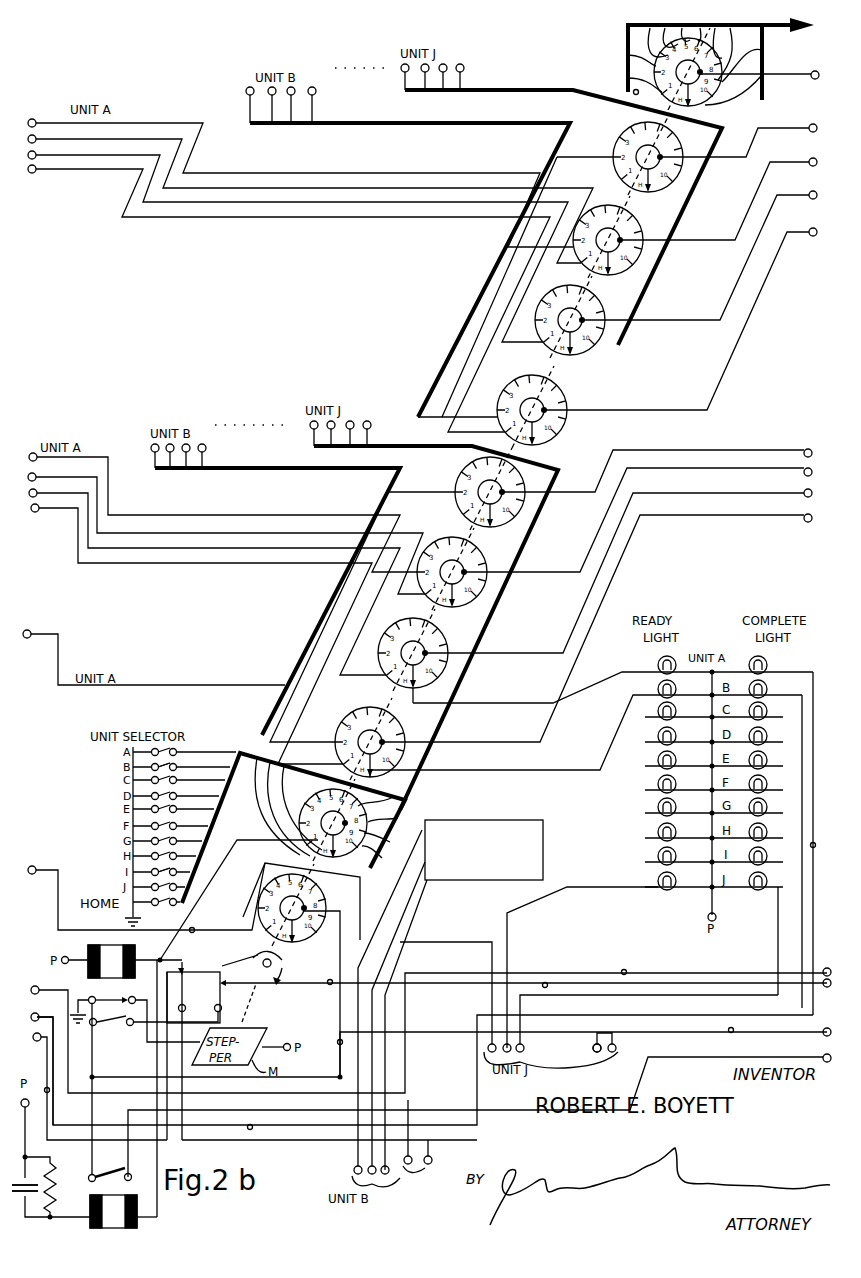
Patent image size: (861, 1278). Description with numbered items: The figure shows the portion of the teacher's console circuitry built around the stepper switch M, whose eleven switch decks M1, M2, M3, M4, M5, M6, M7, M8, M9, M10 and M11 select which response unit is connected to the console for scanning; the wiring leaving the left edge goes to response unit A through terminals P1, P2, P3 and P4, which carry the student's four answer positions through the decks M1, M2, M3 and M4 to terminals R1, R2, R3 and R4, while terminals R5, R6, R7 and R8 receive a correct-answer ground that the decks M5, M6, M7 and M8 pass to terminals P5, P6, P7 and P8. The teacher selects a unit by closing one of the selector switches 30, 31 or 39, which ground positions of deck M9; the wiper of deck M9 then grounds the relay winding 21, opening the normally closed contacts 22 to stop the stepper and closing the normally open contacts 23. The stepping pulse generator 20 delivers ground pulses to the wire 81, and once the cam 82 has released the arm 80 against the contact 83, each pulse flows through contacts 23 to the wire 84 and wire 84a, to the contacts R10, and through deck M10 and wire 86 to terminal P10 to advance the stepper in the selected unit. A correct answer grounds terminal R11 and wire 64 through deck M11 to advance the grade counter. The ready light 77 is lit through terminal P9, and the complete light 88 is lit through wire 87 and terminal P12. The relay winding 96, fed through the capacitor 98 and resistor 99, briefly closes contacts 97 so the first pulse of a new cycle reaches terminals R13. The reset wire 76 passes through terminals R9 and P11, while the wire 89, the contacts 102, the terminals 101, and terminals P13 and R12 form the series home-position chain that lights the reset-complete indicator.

The stepping pulse generator 20 is at (525, 850).
The relay winding 21 is at (110, 946).
The normally closed contacts 22 is at (122, 997).
The normally open contacts 23 is at (98, 1030).
The selector switch 30 is at (152, 754).
The selector switch 31 is at (150, 770).
The selector switch 39 is at (158, 872).
The wire 64 is at (636, 93).
The reset wire 76 is at (625, 970).
The ready light 77 is at (658, 664).
The arm 80 is at (222, 968).
The wire 81 is at (332, 985).
The cam 82 is at (272, 955).
The contact 83 is at (235, 984).
The wire 84 is at (340, 1044).
The wire 84a is at (545, 985).
The wire 86 is at (195, 930).
The wire 87 is at (813, 845).
The complete light 88 is at (767, 664).
The wire 89 is at (47, 1090).
The relay winding 96 is at (125, 1208).
The contacts 97 is at (122, 1172).
The capacitor 98 is at (20, 1180).
The resistor 99 is at (55, 1178).
The terminals 101 is at (594, 1052).
The contacts 102 is at (182, 972).
The stepper switch deck M1 is at (628, 132).
The stepper switch deck M2 is at (660, 226).
The stepper switch deck M3 is at (556, 300).
The stepper switch deck M4 is at (560, 400).
The stepper switch deck M5 is at (466, 477).
The stepper switch deck M6 is at (476, 562).
The stepper switch deck M7 is at (400, 628).
The stepper switch deck M8 is at (398, 716).
The stepper switch deck M9 is at (318, 823).
The stepper switch deck M10 is at (342, 912).
The stepper switch deck M11 is at (660, 55).
The terminal P1 is at (300, 174).
The terminal P2 is at (310, 194).
The terminal P3 is at (36, 156).
The terminal P4 is at (289, 298).
The terminal P5 is at (216, 506).
The terminal P6 is at (226, 528).
The terminal P7 is at (207, 580).
The terminal P8 is at (194, 634).
The terminal P9 is at (152, 650).
The terminal P10 is at (146, 890).
The terminal P11 is at (424, 1031).
The terminal P12 is at (36, 1061).
The terminal P13 is at (92, 1086).
The terminal R1 is at (747, 133).
The terminal R2 is at (727, 192).
The terminal R3 is at (708, 248).
The terminal R4 is at (689, 312).
The terminal R5 is at (666, 464).
The terminal R6 is at (647, 514).
The terminal R7 is at (628, 569).
The terminal R8 is at (606, 626).
The terminal R9 is at (828, 961).
The contacts R10 is at (828, 1050).
The terminal R11 is at (769, 66).
The terminal R12 is at (828, 1025).
The terminals R13 is at (828, 993).